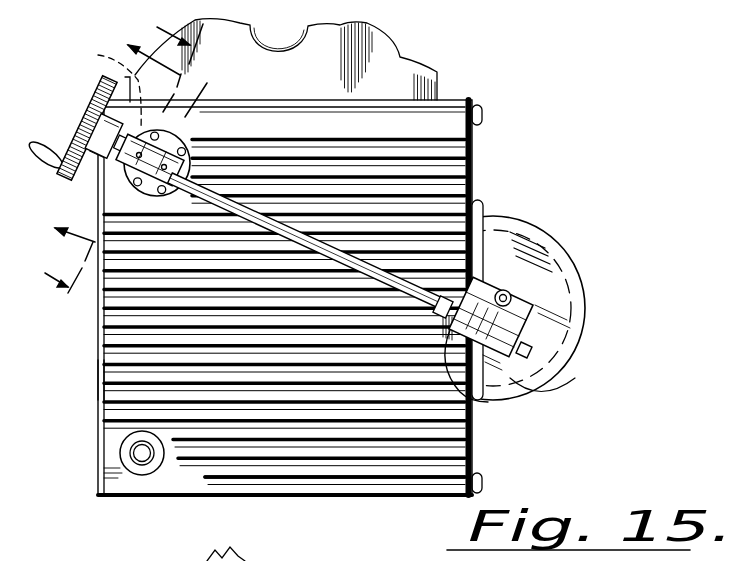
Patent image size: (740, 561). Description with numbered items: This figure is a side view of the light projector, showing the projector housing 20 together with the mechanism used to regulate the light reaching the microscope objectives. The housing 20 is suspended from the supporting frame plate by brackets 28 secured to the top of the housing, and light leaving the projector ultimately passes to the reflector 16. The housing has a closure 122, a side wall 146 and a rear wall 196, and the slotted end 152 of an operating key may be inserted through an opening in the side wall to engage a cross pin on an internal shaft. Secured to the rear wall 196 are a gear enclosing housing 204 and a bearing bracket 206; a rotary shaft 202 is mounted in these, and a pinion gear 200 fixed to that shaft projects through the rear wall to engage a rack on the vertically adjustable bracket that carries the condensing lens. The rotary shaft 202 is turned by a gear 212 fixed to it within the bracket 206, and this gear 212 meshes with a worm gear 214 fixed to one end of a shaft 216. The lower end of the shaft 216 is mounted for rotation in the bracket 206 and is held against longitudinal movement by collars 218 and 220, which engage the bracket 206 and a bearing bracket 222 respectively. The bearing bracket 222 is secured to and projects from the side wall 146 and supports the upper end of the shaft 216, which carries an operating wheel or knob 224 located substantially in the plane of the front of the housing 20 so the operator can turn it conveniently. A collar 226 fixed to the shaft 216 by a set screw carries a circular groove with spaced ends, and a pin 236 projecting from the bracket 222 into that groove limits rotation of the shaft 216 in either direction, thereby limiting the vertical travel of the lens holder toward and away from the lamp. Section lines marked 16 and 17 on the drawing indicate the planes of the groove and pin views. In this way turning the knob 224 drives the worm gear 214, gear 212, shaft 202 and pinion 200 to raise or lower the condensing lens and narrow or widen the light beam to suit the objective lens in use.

The reflector 16 is at (107, 144).
The section line 17- 17 is at (114, 154).
The housing 20 is at (449, 113).
The brackets 28 is at (374, 67).
The closure 122 is at (97, 370).
The side wall 146 is at (332, 482).
The slotted end 152 is at (146, 462).
The rear wall 196 is at (470, 446).
The pinion gear 200 is at (558, 214).
The rotary shaft 202 is at (520, 290).
The gear enclosing housing 204 is at (567, 247).
The bearing bracket 206 is at (540, 320).
The gear 212 is at (503, 282).
The worm gear 214 is at (544, 388).
The shaft 216 is at (376, 243).
The collar 218 is at (467, 404).
The collar 220 is at (193, 160).
The bearing bracket 222 is at (170, 143).
The operating wheel or knob 224 is at (88, 120).
The collar 226 is at (115, 166).
The pin 236 is at (90, 79).